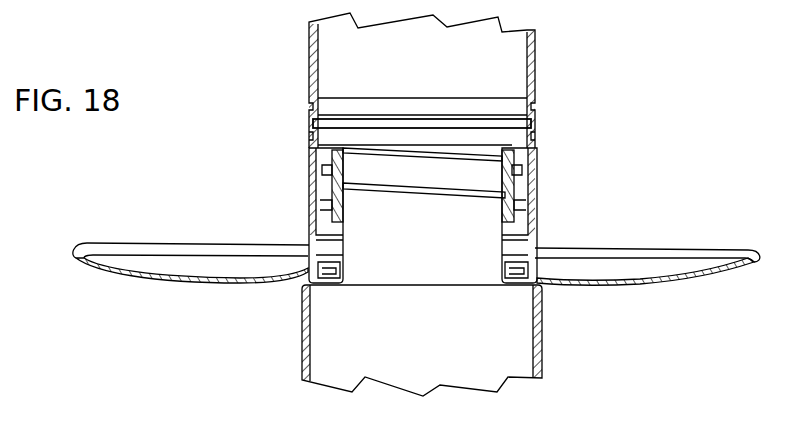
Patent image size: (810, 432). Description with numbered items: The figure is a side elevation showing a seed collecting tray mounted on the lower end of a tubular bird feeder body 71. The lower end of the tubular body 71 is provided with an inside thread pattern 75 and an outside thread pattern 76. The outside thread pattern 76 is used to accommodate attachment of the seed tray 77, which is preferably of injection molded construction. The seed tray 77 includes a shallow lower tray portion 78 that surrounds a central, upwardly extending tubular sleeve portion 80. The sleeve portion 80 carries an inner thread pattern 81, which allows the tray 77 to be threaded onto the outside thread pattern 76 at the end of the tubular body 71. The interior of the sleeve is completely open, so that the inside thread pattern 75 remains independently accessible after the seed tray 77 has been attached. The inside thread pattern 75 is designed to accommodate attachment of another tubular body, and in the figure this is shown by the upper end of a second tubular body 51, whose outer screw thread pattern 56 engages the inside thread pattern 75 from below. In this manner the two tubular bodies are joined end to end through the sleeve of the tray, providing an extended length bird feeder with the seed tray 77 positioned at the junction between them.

The tubular body 71 is at (537, 81).
The seed tray 77 is at (302, 170).
The lower tray portion 78 is at (187, 243).
The tubular sleeve portion 80 is at (310, 213).
The inner thread pattern 81 is at (343, 273).
The inside thread pattern 75 is at (505, 191).
The outside thread pattern 76 is at (532, 247).
The outer screw thread pattern 56 is at (503, 262).
The tubular body 51 is at (545, 348).